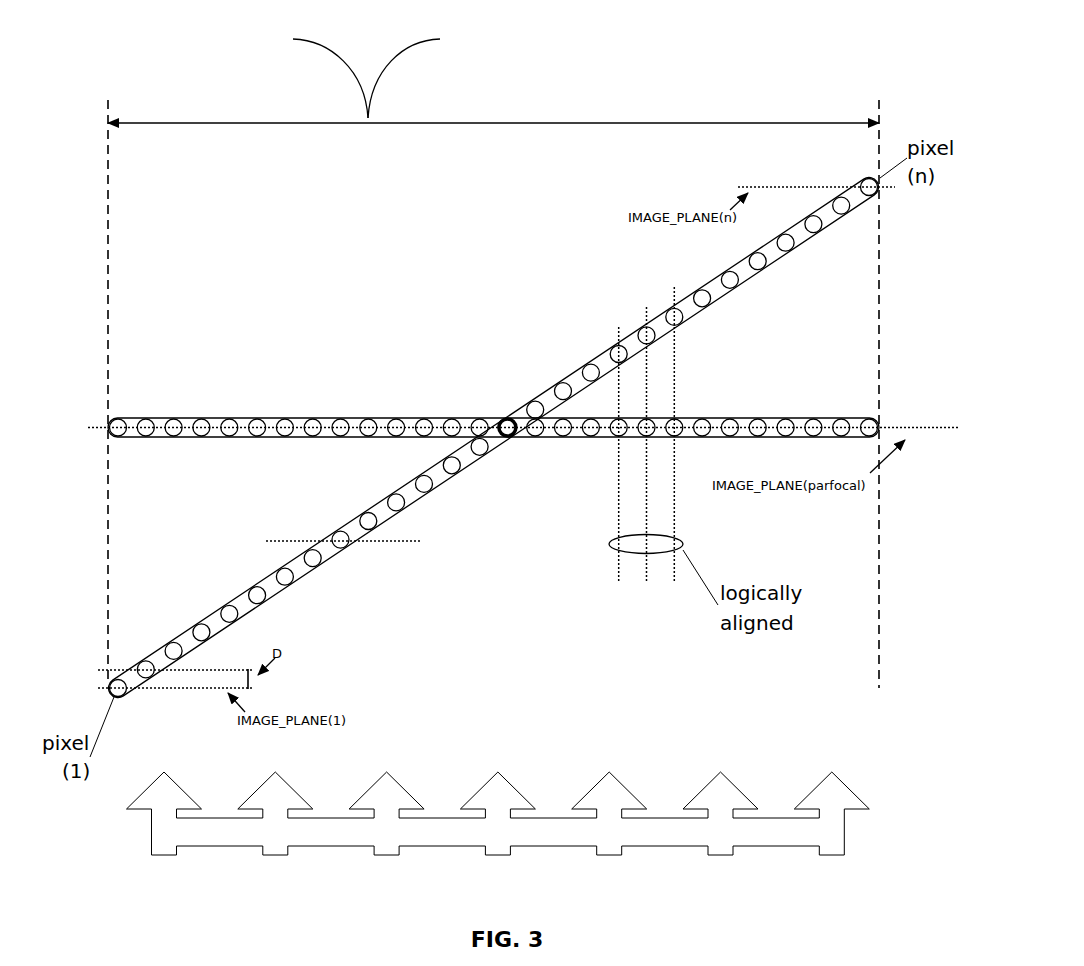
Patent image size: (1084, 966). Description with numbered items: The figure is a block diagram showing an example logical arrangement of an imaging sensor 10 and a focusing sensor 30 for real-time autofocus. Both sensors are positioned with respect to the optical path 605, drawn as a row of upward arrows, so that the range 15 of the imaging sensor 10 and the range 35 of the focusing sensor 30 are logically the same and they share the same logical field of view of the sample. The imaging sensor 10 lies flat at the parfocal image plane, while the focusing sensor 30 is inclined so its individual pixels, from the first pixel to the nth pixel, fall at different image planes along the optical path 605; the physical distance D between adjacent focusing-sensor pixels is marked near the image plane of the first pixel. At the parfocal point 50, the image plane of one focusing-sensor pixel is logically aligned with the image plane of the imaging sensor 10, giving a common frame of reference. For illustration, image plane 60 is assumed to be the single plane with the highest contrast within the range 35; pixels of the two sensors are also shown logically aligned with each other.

The imaging sensor 10 is at (262, 387).
The range of the imaging sensor 15 is at (454, 62).
The focusing sensor 30 is at (735, 313).
The range of the focusing sensor 35 is at (493, 64).
The parfocal point 50 is at (507, 413).
The image plane 60 is at (403, 547).
The optical path 605 is at (498, 813).